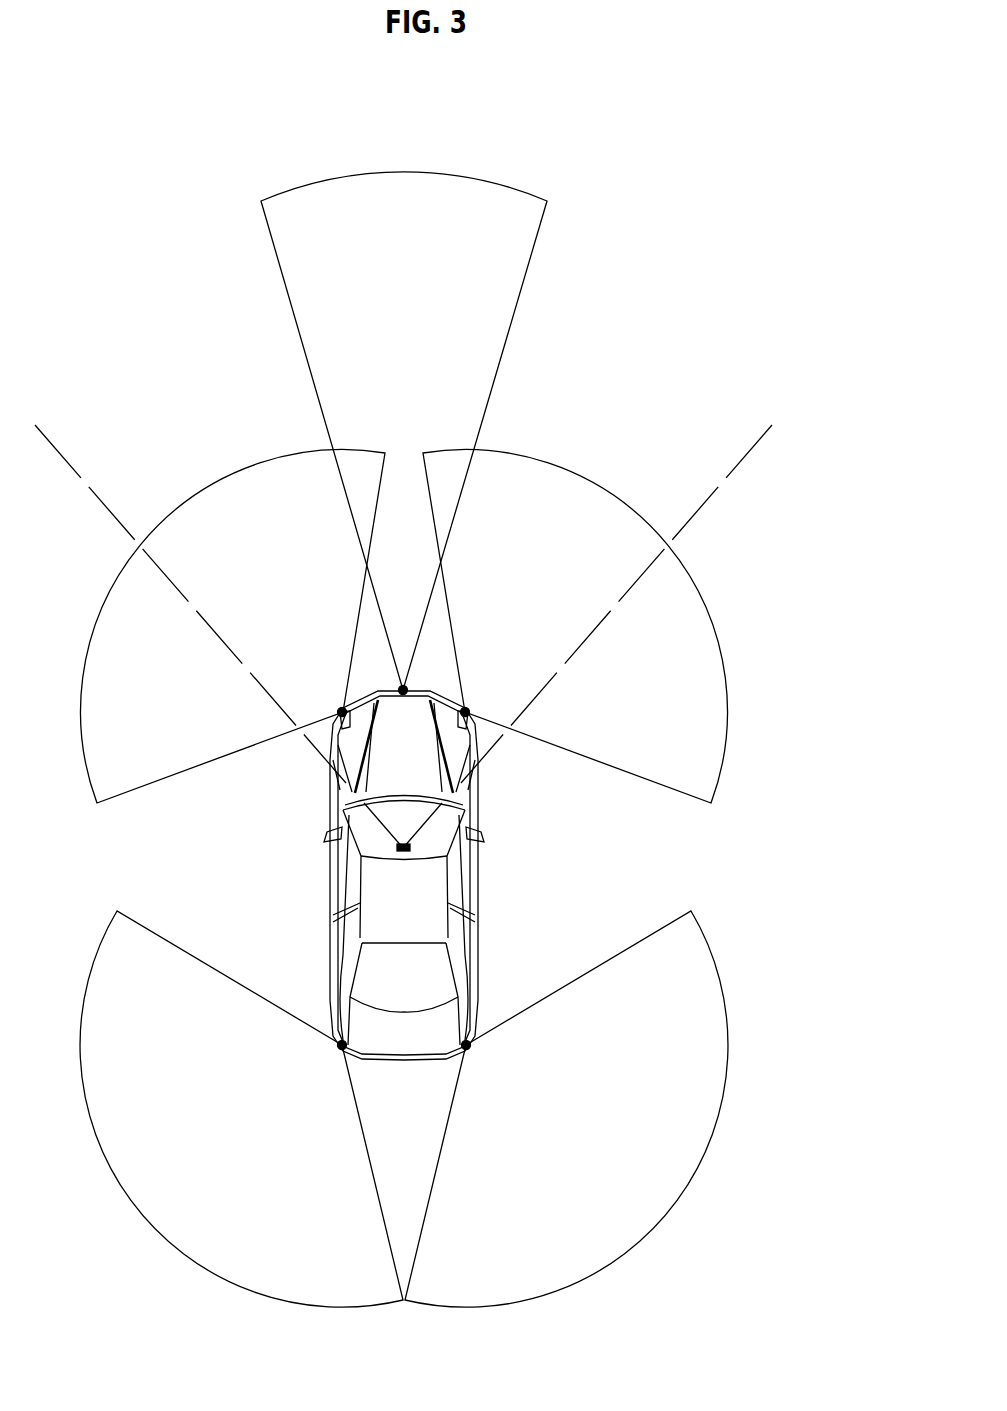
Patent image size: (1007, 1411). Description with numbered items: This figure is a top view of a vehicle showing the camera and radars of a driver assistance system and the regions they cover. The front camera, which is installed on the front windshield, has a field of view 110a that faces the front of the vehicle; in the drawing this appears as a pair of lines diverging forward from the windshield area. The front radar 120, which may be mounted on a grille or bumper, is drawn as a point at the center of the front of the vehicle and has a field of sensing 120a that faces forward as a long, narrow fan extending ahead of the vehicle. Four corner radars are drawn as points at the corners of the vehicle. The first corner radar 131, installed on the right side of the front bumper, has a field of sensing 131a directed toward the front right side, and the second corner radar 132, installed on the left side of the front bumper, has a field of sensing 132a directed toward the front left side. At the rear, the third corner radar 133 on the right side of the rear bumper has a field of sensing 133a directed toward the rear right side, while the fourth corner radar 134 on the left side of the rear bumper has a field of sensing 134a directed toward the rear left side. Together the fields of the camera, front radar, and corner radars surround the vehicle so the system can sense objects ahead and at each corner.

The field of view 110a is at (733, 473).
The front radar 120 is at (405, 689).
The field of sensing 120a is at (492, 313).
The first corner radar 131 is at (466, 711).
The field of sensing 131a is at (603, 503).
The second corner radar 132 is at (341, 711).
The field of sensing 132a is at (203, 503).
The third corner radar 133 is at (468, 1047).
The field of sensing 133a is at (677, 1183).
The fourth corner radar 134 is at (340, 1047).
The field of sensing 134a is at (132, 1183).